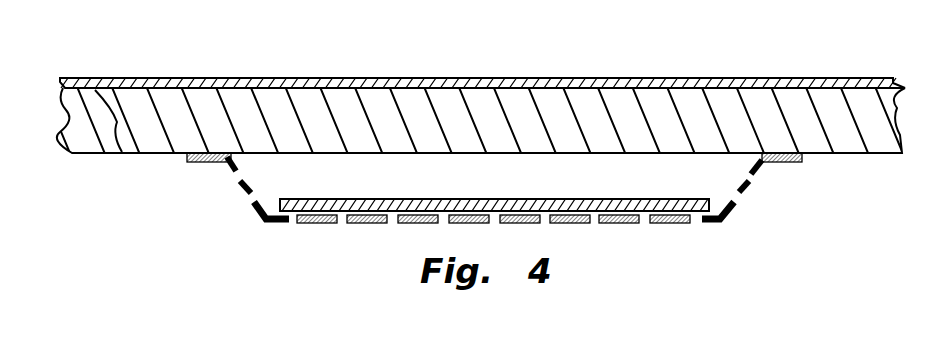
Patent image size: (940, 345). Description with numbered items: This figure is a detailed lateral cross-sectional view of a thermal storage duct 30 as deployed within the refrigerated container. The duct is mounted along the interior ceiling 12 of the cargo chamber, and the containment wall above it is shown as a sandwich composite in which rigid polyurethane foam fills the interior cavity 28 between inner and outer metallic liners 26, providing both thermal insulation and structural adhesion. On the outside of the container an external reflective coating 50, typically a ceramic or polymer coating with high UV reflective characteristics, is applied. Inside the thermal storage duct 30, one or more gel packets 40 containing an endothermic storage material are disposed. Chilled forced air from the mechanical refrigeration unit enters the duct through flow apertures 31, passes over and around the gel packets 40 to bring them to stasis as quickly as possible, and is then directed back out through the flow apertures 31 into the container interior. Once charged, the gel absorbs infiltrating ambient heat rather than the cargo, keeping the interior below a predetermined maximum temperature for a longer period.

The interior ceiling 12 is at (881, 153).
The metallic liner 26 is at (87, 86).
The interior cavity 28 is at (190, 115).
The thermal storage duct 30 is at (227, 168).
The flow aperture 31 is at (645, 222).
The gel packet 40 is at (377, 198).
The external reflective coating 50 is at (602, 78).